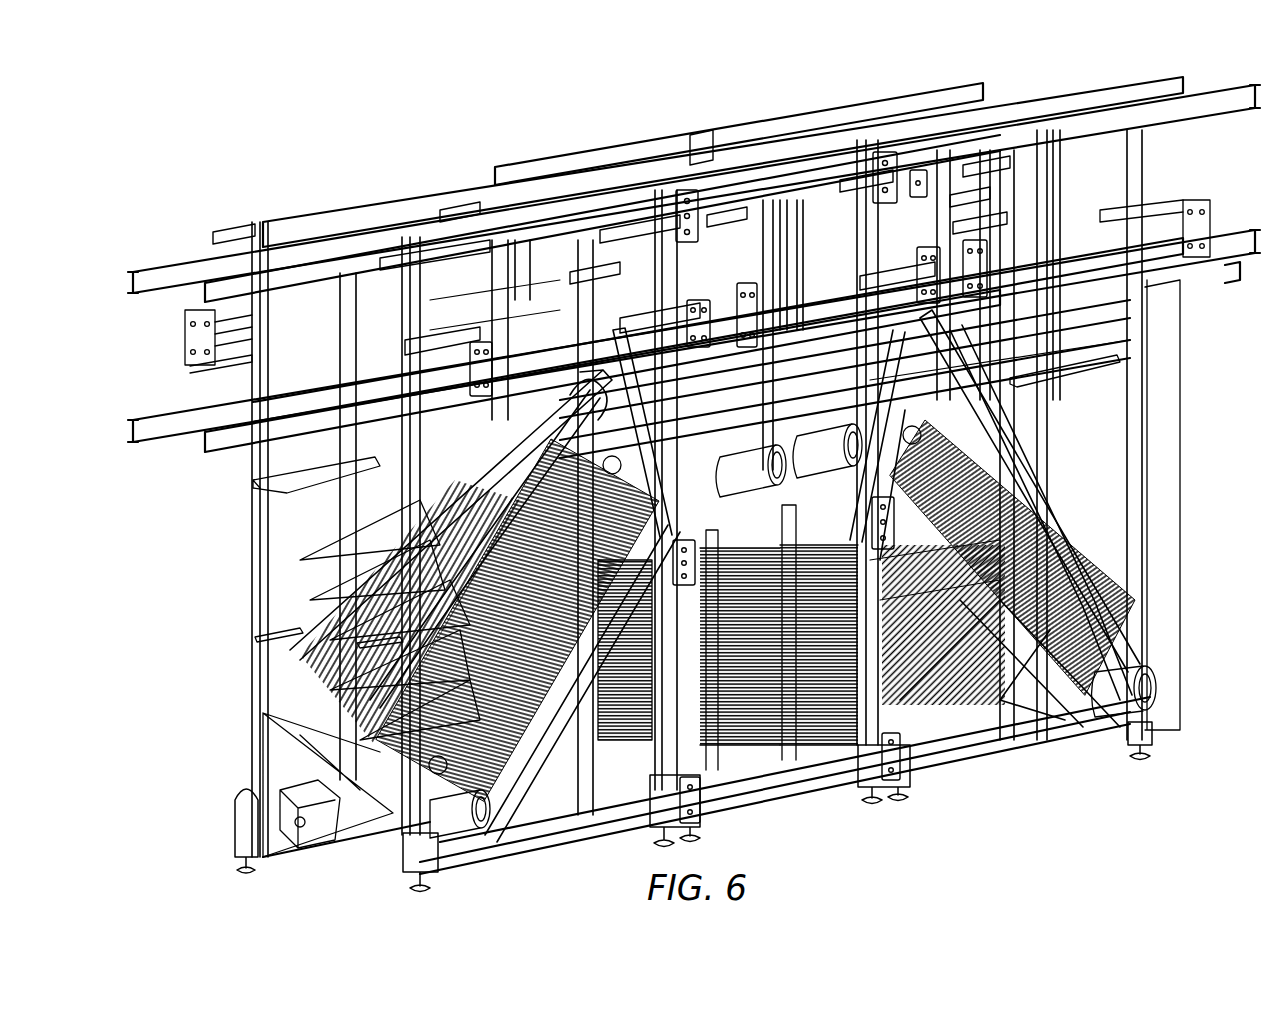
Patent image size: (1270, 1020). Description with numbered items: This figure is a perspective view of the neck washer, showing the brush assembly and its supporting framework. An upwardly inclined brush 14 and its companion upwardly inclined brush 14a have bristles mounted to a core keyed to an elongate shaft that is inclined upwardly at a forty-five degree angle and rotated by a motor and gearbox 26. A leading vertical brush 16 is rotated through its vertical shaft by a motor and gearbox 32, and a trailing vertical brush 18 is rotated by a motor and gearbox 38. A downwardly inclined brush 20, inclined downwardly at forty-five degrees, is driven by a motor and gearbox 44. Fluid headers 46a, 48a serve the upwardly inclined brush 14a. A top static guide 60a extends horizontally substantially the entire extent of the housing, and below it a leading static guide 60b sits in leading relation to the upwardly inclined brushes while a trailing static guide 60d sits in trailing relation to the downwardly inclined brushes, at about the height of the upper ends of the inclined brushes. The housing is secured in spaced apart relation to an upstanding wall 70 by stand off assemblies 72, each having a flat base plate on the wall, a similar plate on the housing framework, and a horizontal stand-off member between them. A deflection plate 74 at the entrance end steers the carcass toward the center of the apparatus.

The upwardly inclined brush 14 is at (515, 833).
The upwardly inclined brush 14a is at (283, 716).
The leading vertical brush 16 is at (747, 767).
The trailing vertical brush 18 is at (827, 747).
The downwardly inclined brush 20 is at (1083, 557).
The motor and gearbox 26 is at (330, 833).
The motor and gearbox 32 is at (758, 483).
The motor and gearbox 38 is at (833, 471).
The motor and gearbox 44 is at (1126, 703).
The fluid header 46a is at (333, 572).
The fluid header 48a is at (333, 600).
The top static guide 60a is at (252, 323).
The leading static guide 60b is at (338, 470).
The trailing static guide 60d is at (1087, 363).
The upstanding wall 70 is at (190, 495).
The stand off assemblies 72 is at (230, 352).
The deflection plate 74 is at (1167, 440).